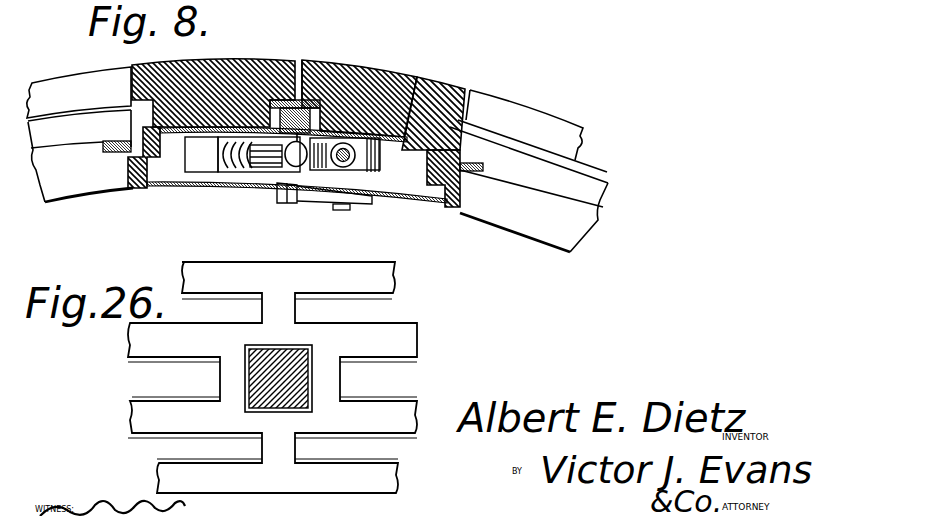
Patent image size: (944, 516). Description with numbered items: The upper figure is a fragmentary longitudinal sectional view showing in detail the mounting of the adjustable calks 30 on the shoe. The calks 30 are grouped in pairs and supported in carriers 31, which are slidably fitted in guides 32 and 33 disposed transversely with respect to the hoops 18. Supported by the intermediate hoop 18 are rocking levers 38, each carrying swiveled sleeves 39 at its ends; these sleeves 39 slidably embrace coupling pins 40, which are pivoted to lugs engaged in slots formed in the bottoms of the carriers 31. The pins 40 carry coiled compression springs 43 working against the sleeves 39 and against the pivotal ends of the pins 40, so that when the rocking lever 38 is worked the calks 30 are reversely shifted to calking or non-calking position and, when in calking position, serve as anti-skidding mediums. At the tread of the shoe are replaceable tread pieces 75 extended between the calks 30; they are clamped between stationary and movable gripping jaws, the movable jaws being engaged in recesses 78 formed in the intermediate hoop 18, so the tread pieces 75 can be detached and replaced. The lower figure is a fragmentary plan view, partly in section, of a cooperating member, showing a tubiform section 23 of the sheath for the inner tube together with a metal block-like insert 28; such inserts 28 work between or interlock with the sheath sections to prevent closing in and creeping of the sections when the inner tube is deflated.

In FIG. 8, the replaceable tread piece 75 is at (83, 80).
In FIG. 8, the recess 78 is at (66, 133).
In FIG. 8, the hoop 18 is at (580, 225).
In FIG. 8, the adjustable calk 30 is at (273, 63).
In FIG. 8, the guide 32 is at (335, 63).
In FIG. 8, the carrier 31 is at (407, 90).
In FIG. 8, the guide 33 is at (133, 190).
In FIG. 8, the swiveled sleeve 39 is at (267, 160).
In FIG. 8, the coiled compression spring 43 is at (233, 167).
In FIG. 8, the rocking lever 38 is at (292, 203).
In FIG. 8, the coupling pin 40 is at (385, 167).
In FIG. 8, the block-like insert 28 is at (411, 7).
In FIG. 26, the block-like insert 28 is at (293, 373).
In FIG. 26, the tubiform section 23 is at (382, 328).